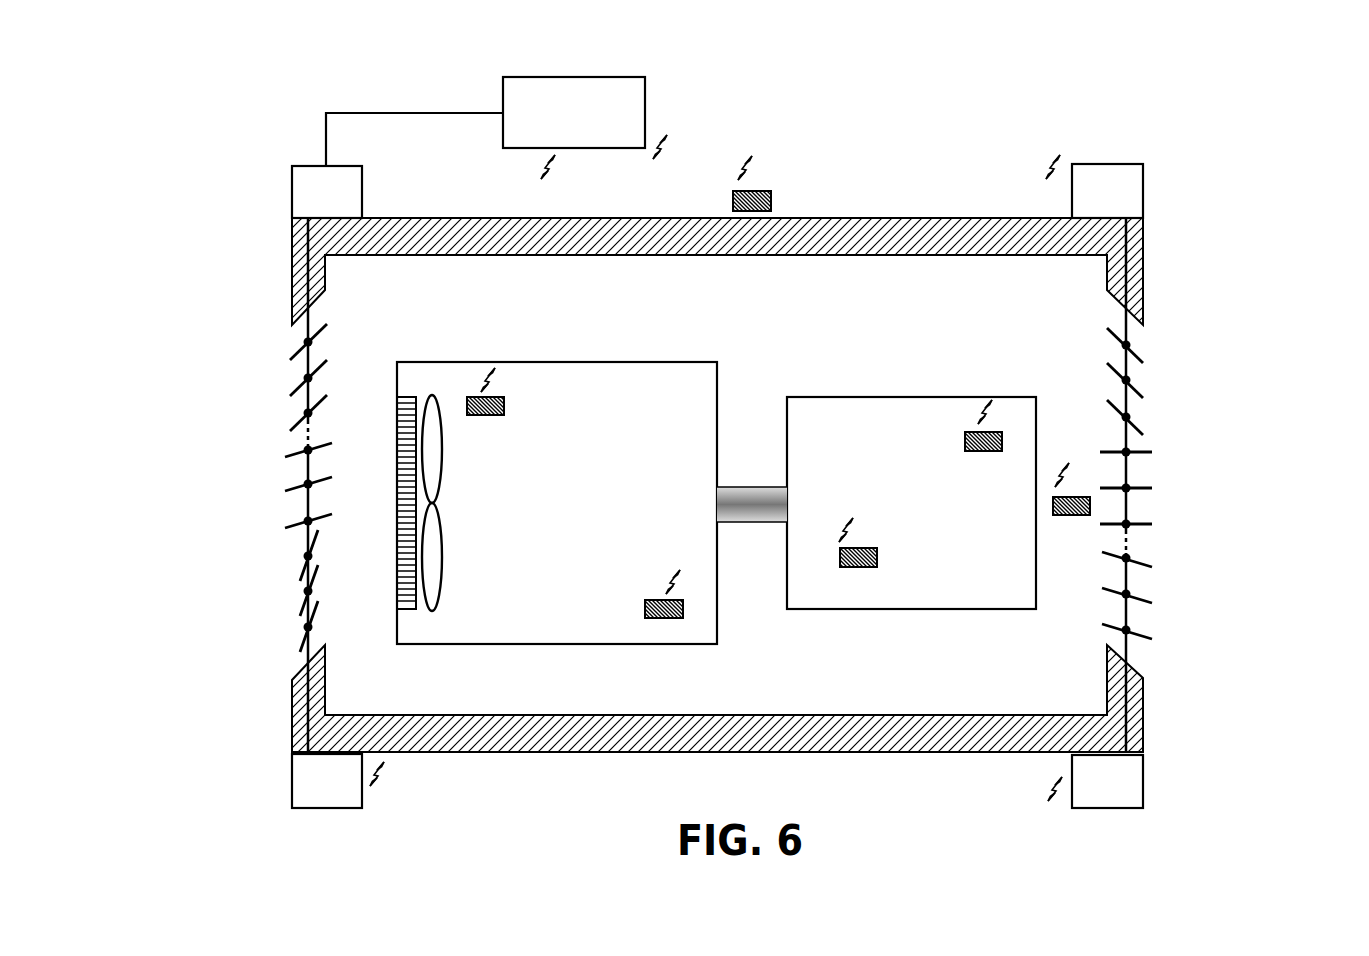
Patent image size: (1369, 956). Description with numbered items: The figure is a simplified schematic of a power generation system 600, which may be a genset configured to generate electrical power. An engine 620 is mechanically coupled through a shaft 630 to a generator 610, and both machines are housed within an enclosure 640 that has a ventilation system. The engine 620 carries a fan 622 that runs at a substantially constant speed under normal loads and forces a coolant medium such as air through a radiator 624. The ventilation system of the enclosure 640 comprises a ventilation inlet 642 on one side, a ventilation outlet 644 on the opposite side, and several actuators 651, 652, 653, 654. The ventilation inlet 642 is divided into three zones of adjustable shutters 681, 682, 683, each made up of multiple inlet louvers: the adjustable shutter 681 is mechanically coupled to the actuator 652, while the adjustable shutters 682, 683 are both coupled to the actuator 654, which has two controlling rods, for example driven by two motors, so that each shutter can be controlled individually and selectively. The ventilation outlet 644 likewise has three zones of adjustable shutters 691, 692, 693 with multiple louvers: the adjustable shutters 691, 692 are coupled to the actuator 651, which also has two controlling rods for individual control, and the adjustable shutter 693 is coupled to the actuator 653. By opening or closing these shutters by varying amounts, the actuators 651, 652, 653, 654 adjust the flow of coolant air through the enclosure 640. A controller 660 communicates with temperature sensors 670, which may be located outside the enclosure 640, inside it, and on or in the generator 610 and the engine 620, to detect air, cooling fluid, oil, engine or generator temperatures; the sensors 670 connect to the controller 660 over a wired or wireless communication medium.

The power generation system 600 is at (1112, 86).
The generator 610 is at (893, 514).
The engine 620 is at (557, 504).
The fan 622 is at (442, 408).
The radiator 624 is at (416, 608).
The shaft 630 is at (758, 503).
The enclosure 640 is at (935, 752).
The ventilation inlet 642 is at (1232, 485).
The ventilation outlet 644 is at (193, 485).
The actuator 651 is at (303, 206).
The actuator 652 is at (1085, 206).
The actuator 653 is at (304, 793).
The actuator 654 is at (1085, 793).
The controller 660 is at (555, 129).
The temperature sensors 670 is at (660, 618).
The adjustable shutter 681 is at (1163, 383).
The adjustable shutter 682 is at (1165, 497).
The adjustable shutter 683 is at (1165, 613).
The adjustable shutter 691 is at (268, 382).
The adjustable shutter 692 is at (268, 498).
The adjustable shutter 693 is at (268, 622).